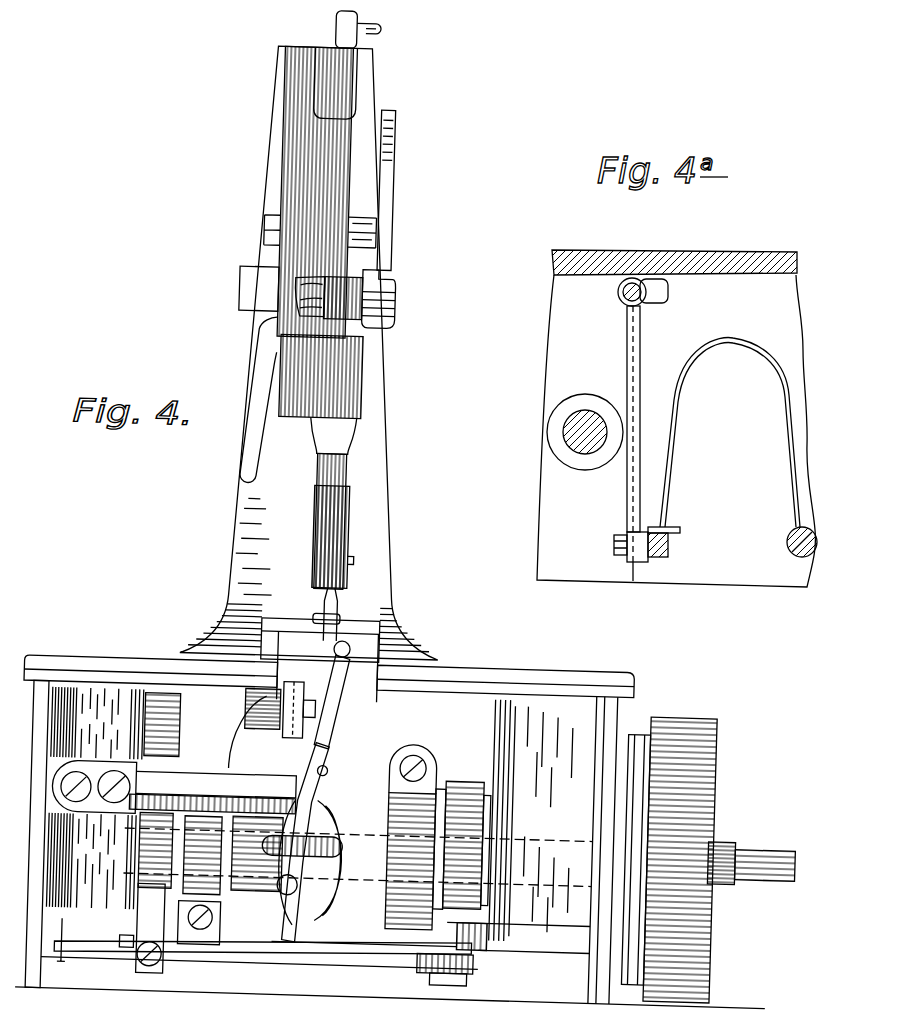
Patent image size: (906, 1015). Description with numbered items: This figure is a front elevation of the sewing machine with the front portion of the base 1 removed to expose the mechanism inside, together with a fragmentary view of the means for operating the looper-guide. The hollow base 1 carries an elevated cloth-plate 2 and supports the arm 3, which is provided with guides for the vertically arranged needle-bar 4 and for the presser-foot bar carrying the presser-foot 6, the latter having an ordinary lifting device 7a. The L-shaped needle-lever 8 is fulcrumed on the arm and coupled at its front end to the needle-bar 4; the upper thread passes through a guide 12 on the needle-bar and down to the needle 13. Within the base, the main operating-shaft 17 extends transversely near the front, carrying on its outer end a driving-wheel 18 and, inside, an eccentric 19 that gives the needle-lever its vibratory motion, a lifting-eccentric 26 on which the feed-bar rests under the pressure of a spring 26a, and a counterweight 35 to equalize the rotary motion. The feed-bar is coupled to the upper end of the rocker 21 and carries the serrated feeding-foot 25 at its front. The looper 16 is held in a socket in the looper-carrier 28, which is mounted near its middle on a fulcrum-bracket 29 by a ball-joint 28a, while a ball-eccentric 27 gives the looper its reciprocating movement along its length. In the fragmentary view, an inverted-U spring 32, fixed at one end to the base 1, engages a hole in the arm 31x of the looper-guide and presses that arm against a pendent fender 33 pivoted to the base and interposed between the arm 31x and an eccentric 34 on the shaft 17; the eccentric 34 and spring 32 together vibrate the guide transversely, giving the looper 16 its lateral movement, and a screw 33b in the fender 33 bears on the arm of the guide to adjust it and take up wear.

In FIG. 4, the base 1 is at (548, 664).
In FIG. 4, the cloth-plate 2 is at (282, 632).
In FIG. 4, the arm 3 is at (388, 496).
In FIG. 4, the needle-bar 4 is at (292, 472).
In FIG. 4, the presser-foot 6 is at (343, 617).
In FIG. 4, the lifting device 7a is at (252, 370).
In FIG. 4, the needle-lever 8 is at (380, 177).
In FIG. 4, the guide 12 is at (373, 29).
In FIG. 4, the needle 13 is at (326, 600).
In FIG. 4, the looper 16 is at (350, 668).
In FIG. 4A, the main operating-shaft 17 is at (565, 433).
In FIG. 4, the driving-wheel 18 is at (687, 712).
In FIG. 4, the eccentric 19 is at (400, 790).
In FIG. 4, the rocker 21 is at (248, 732).
In FIG. 4, the feeding-foot 25 is at (318, 642).
In FIG. 4, the eccentric 26 is at (262, 893).
In FIG. 4, the spring 26a is at (247, 710).
In FIG. 4, the ball-eccentric 27 is at (350, 890).
In FIG. 4, the looper-carrier 28 is at (335, 758).
In FIG. 4, the ball-joint 28a is at (300, 750).
In FIG. 4, the fulcrum-bracket 29 is at (222, 774).
In FIG. 4, the arm 31x is at (128, 948).
In FIG. 4A, the arm 31x is at (681, 529).
In FIG. 4, the spring 32 is at (263, 940).
In FIG. 4A, the spring 32 is at (745, 337).
In FIG. 4, the fender 33 is at (182, 748).
In FIG. 4A, the fender 33 is at (627, 357).
In FIG. 4, the screw 33b is at (155, 950).
In FIG. 4A, the screw 33b is at (617, 535).
In FIG. 4, the eccentric 34 is at (145, 850).
In FIG. 4A, the eccentric 34 is at (586, 394).
In FIG. 4, the counterweight 35 is at (478, 790).